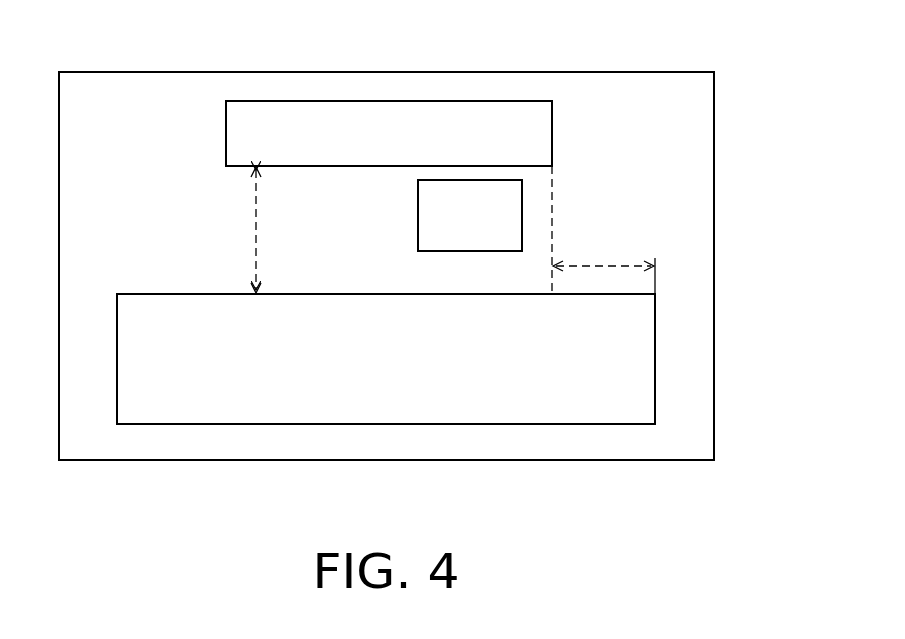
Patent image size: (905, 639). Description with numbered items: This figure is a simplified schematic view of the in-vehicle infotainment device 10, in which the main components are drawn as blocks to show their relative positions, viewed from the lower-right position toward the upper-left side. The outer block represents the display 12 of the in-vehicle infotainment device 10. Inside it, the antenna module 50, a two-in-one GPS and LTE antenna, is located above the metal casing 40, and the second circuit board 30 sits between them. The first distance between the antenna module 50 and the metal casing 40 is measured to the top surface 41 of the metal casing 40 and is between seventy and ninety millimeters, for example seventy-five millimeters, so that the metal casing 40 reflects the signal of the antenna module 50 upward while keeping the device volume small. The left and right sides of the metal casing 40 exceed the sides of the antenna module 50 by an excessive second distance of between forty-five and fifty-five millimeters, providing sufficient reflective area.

The in-vehicle infotainment device 10 is at (397, 261).
The display 12 is at (98, 450).
The second circuit board 30 is at (505, 218).
The metal casing 40 is at (635, 372).
The top surface 41 is at (171, 291).
The antenna module 50 is at (386, 115).